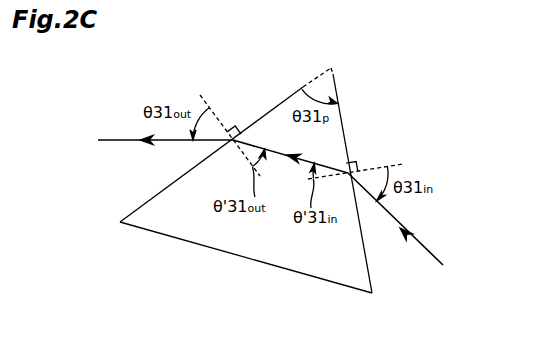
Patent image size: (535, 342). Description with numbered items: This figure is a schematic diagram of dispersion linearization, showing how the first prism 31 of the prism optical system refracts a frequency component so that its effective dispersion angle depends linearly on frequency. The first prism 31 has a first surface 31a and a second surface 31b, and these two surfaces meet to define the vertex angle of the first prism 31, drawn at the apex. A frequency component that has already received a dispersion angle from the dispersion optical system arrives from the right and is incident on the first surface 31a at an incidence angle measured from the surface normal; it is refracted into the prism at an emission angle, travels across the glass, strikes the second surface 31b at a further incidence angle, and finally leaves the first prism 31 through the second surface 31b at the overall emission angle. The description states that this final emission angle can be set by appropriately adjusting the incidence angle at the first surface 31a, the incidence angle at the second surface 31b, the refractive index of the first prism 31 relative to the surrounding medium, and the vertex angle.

The first prism 31 is at (261, 180).
The first surface 31a is at (368, 260).
The second surface 31b is at (150, 200).